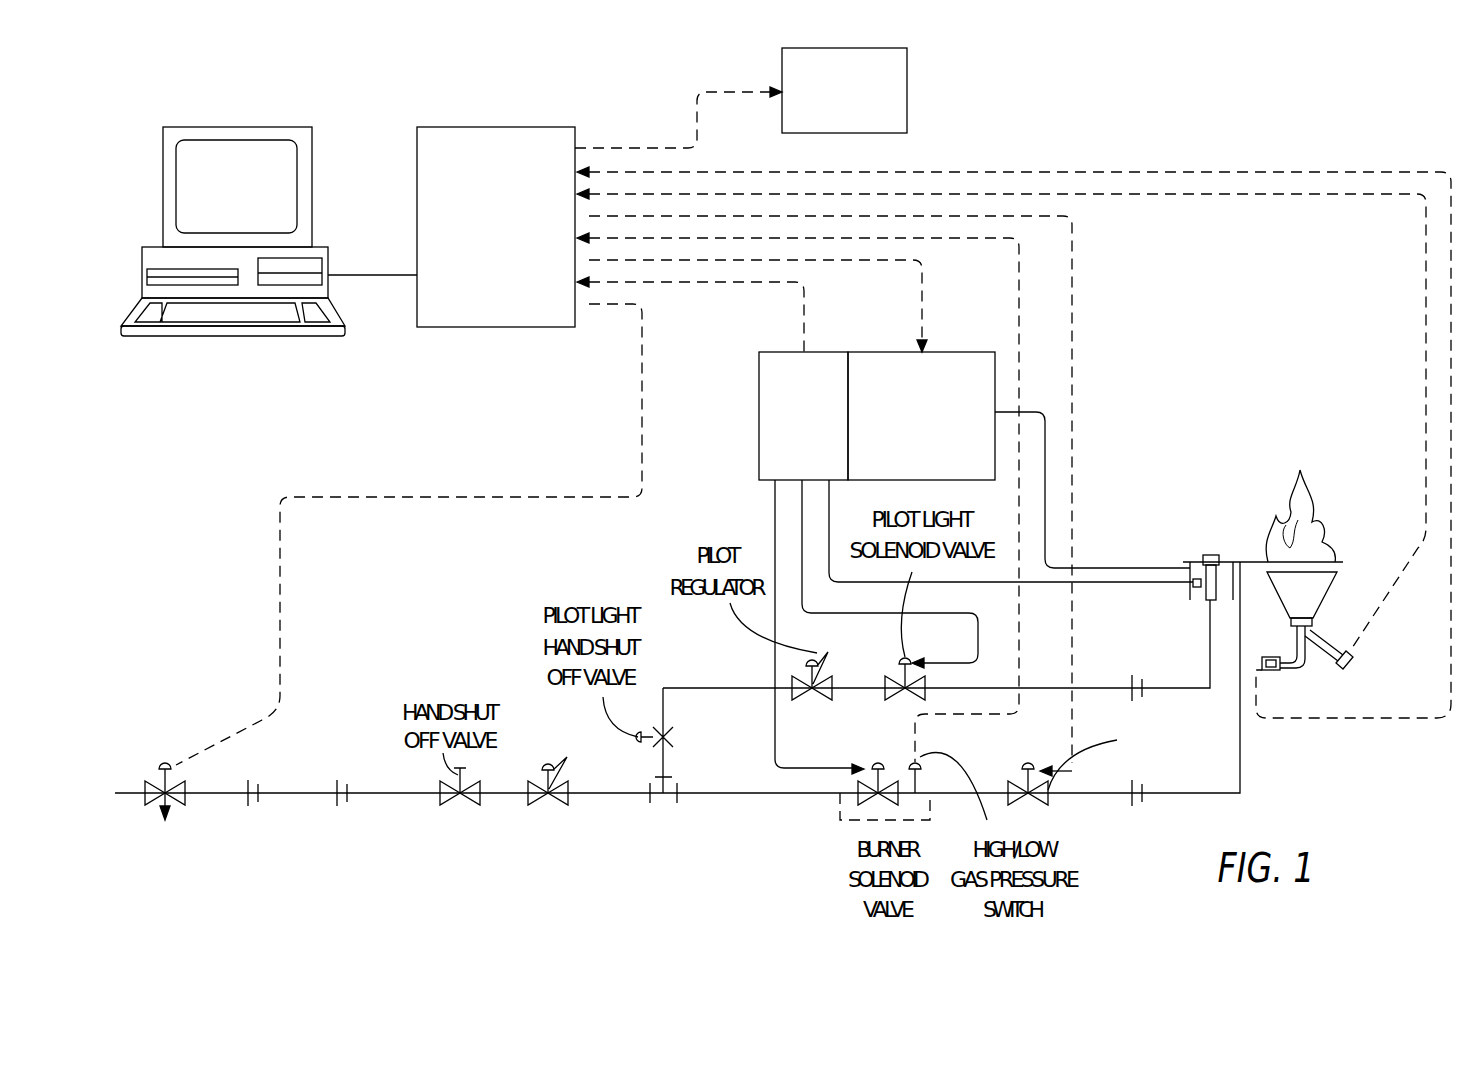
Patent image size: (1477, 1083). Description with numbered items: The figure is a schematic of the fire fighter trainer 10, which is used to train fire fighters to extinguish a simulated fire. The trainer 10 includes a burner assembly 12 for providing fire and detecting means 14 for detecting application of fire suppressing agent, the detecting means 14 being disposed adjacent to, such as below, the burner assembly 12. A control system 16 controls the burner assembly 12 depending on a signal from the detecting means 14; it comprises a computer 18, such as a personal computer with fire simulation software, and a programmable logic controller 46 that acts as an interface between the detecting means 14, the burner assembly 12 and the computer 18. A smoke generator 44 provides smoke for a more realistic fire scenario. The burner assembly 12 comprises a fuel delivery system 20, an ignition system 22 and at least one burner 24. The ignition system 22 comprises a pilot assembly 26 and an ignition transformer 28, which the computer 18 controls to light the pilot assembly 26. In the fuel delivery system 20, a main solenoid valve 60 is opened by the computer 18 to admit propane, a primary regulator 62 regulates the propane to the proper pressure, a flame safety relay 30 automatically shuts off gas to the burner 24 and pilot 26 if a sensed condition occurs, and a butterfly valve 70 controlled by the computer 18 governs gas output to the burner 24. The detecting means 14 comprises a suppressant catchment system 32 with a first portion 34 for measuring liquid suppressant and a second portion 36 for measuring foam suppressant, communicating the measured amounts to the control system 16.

The fire fighter trainer 10 is at (772, 845).
The burner assembly 12 is at (1280, 232).
The means for detecting application of fire suppressing agent 14 is at (1420, 632).
The control system 16 is at (269, 202).
The computer 18 is at (318, 192).
The fuel delivery system 20 is at (630, 813).
The ignition system 22 is at (1112, 372).
The burner 24 is at (1300, 470).
The pilot assembly 26 is at (1188, 552).
The ignition transformer 28 is at (940, 360).
The flame safety relay 30 is at (759, 363).
The suppressant catchment system 32 is at (1375, 650).
The first portion 34 is at (1265, 682).
The second portion 36 is at (1323, 635).
The smoke generator 44 is at (920, 70).
The programmable logic controller 46 is at (510, 126).
The main solenoid valve 60 is at (198, 800).
The primary regulator 62 is at (552, 753).
The butterfly valve 70 is at (1057, 805).